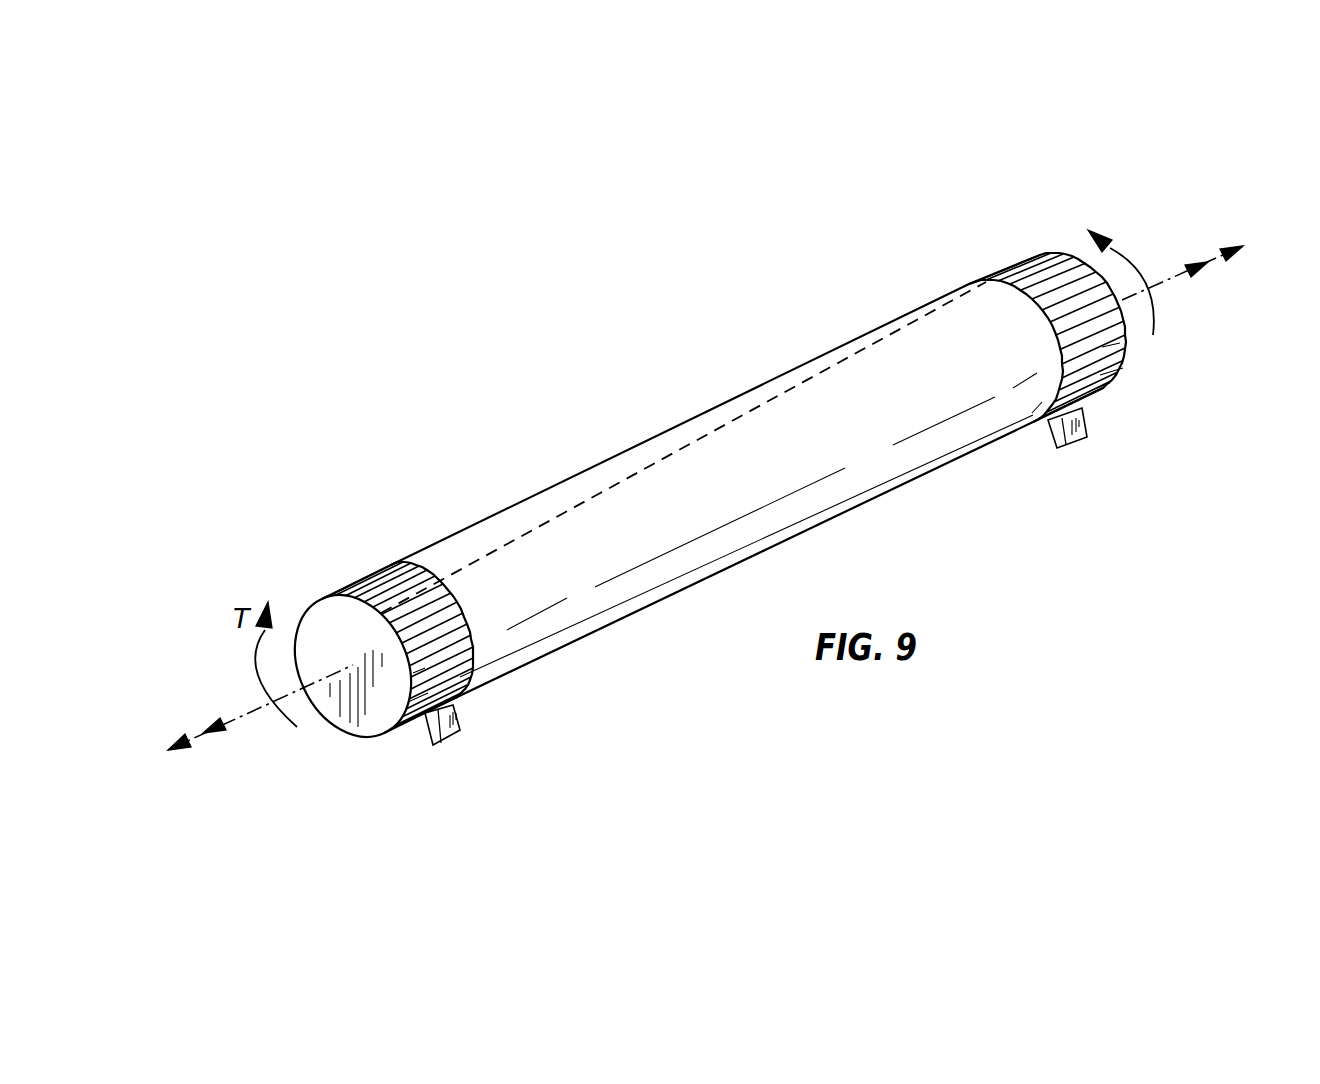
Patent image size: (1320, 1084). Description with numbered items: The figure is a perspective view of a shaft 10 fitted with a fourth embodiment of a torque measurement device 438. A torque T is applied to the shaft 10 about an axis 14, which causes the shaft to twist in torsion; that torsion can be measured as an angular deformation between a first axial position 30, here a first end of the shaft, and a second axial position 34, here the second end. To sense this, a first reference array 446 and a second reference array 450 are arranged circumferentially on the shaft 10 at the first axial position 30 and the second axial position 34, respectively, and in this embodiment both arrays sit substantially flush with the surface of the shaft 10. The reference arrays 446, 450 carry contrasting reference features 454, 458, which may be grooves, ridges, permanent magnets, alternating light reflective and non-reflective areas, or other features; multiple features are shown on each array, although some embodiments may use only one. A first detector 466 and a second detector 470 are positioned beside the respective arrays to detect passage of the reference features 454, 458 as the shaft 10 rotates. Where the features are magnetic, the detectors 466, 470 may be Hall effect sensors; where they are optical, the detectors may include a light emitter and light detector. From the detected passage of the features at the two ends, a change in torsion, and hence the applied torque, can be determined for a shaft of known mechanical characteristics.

The shaft 10 is at (688, 433).
The axis 14 is at (195, 738).
The first axial position 30 is at (477, 648).
The second axial position 34 is at (1102, 353).
The torque measurement device 438 is at (432, 380).
The first reference array 446 is at (381, 594).
The second reference array 450 is at (982, 264).
The contrasting reference feature 454 is at (425, 575).
The contrasting reference feature 458 is at (440, 575).
The first detector 466 is at (460, 728).
The second detector 470 is at (1087, 427).